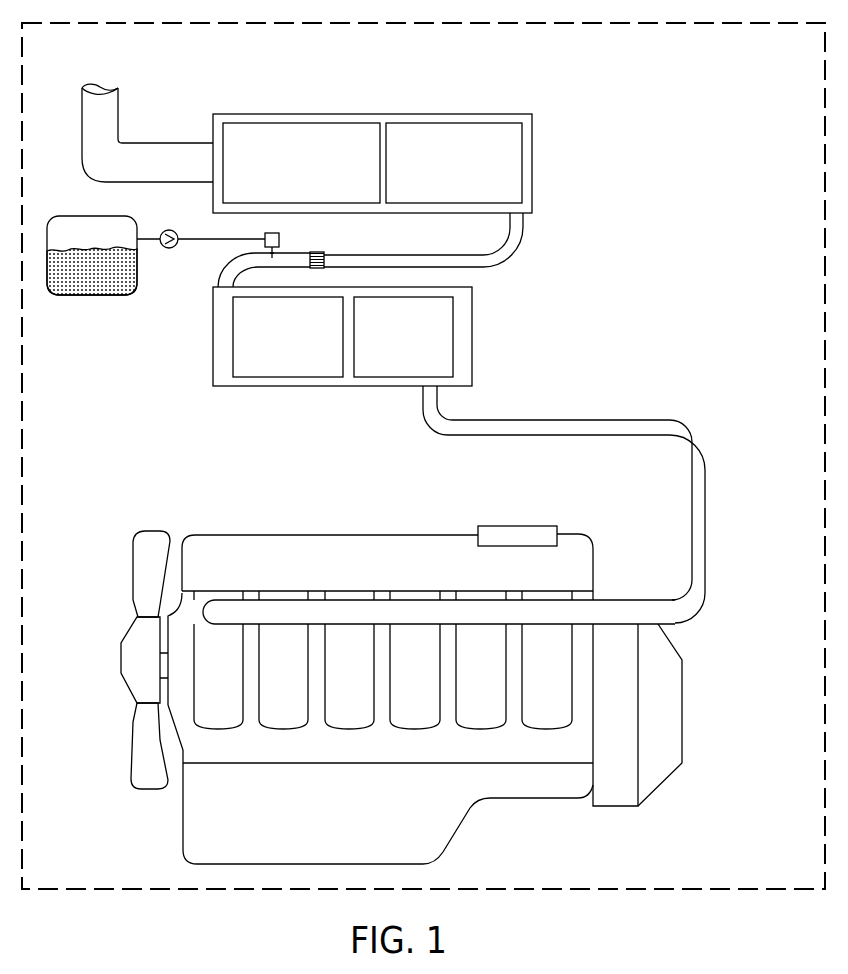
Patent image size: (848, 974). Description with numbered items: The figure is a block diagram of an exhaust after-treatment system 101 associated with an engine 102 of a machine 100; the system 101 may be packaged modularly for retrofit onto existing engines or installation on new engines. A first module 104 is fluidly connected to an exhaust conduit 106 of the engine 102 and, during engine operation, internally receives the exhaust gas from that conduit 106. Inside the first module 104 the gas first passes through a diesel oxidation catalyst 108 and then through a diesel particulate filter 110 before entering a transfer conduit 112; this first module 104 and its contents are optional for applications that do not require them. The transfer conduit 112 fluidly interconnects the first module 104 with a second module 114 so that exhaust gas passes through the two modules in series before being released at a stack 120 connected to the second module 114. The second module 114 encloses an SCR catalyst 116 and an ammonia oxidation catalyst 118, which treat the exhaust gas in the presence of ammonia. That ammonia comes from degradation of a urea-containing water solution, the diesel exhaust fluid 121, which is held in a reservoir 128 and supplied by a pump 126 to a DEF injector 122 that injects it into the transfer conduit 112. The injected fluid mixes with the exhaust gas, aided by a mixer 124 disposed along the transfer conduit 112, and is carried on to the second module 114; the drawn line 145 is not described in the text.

The machine 100 is at (808, 878).
The exhaust after-treatment system 101 is at (600, 81).
The engine 102 is at (707, 708).
The first module 104 is at (475, 355).
The exhaust conduit 106 is at (628, 420).
The diesel oxidation catalyst 108 is at (449, 334).
The diesel particulate filter 110 is at (270, 370).
The transfer conduit 112 is at (503, 265).
The second module 114 is at (400, 113).
The SCR catalyst 116 is at (457, 137).
The ammonia oxidation catalyst 118 is at (268, 135).
The stack 120 is at (126, 136).
The diesel exhaust fluid 121 is at (75, 280).
The DEF injector 122 is at (263, 244).
The mixer 124 is at (313, 253).
The pump 126 is at (166, 250).
The reservoir 128 is at (85, 259).
The reductant line 145 is at (202, 238).